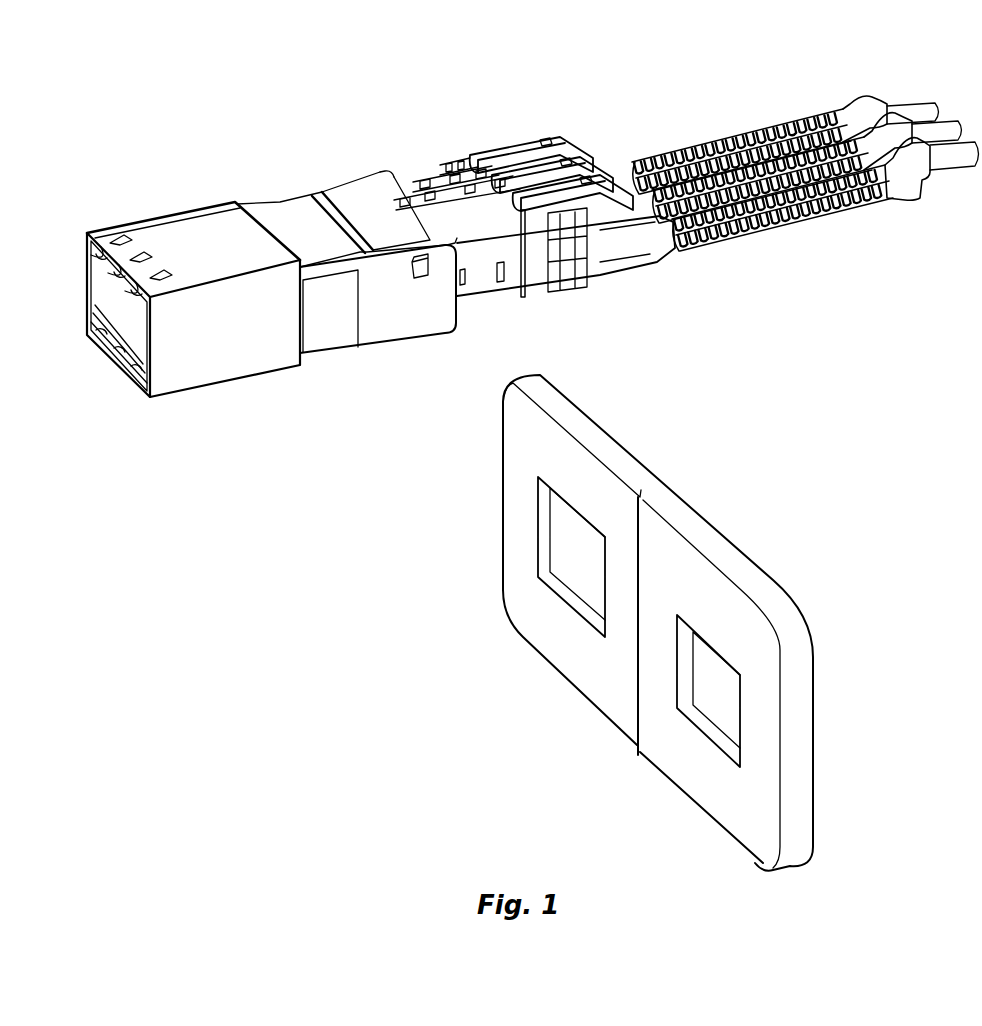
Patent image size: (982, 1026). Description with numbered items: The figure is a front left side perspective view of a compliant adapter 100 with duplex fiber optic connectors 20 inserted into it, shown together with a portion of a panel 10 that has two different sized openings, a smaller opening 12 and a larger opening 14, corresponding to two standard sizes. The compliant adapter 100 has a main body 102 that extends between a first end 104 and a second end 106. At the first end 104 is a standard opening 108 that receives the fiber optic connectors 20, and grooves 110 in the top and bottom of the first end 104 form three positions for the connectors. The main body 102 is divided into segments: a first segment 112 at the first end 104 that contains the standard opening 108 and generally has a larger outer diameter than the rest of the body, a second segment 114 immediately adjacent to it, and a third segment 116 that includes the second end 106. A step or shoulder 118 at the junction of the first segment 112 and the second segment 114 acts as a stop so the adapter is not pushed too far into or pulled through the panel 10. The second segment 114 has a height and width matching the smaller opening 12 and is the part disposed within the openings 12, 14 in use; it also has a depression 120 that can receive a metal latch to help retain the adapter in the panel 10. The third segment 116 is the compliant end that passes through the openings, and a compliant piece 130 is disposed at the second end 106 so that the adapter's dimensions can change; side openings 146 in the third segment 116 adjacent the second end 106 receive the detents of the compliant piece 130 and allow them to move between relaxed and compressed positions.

The panel 10 is at (796, 602).
The smaller opening 12 is at (718, 705).
The larger opening 14 is at (573, 553).
The fiber optic connectors 20 is at (546, 138).
The compliant adapter 100 is at (489, 246).
The main body 102 is at (175, 380).
The first end 104 is at (86, 226).
The second end 106 is at (378, 158).
The standard opening 108 is at (108, 296).
The grooves 110 is at (89, 354).
The first segment 112 is at (160, 212).
The second segment 114 is at (258, 196).
The third segment 116 is at (338, 172).
The shoulder 118 is at (318, 368).
The depression 120 is at (344, 322).
The compliant piece 130 is at (393, 170).
The side openings 146 is at (416, 280).